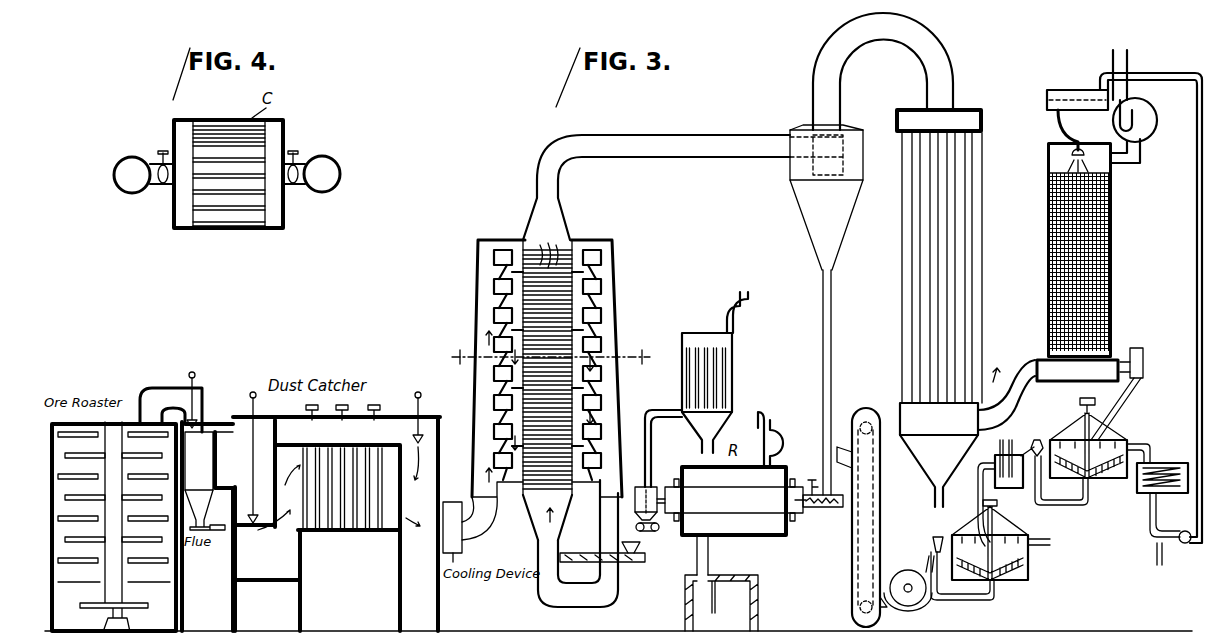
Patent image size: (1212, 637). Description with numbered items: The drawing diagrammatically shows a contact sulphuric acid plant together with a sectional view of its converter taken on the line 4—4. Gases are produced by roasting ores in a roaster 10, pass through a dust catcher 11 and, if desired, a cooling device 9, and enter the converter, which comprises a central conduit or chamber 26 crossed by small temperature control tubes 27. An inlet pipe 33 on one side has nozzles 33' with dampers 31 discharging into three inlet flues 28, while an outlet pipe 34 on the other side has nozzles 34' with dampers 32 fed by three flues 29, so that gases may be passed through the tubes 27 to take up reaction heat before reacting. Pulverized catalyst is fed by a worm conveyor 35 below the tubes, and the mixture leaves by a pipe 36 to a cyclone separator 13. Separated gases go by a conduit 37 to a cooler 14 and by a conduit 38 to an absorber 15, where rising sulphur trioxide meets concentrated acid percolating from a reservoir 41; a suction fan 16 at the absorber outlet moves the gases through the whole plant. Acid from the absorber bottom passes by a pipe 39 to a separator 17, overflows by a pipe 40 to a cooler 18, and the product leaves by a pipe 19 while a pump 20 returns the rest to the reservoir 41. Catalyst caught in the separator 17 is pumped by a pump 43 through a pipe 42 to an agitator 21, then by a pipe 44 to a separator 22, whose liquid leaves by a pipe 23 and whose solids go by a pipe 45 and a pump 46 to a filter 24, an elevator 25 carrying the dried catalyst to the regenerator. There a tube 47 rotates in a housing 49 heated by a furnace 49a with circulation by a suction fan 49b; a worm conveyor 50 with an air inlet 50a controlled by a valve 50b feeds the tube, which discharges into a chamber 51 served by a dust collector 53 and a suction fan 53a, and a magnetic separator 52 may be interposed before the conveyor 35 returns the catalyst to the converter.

In FIG. 3, the section line 4— 4 is at (551, 360).
In FIG. 3, the cooling device 9 is at (462, 540).
In FIG. 3, the roaster 10 is at (114, 527).
In FIG. 3, the dust catcher 11 is at (287, 425).
In FIG. 3, the separator 13 is at (790, 170).
In FIG. 3, the cooler 14 is at (975, 238).
In FIG. 3, the absorber 15 is at (1112, 250).
In FIG. 3, the suction fan 16 is at (1142, 108).
In FIG. 3, the separator 17 is at (1108, 480).
In FIG. 3, the cooler 18 is at (1162, 463).
In FIG. 3, the pipe 19 is at (1150, 552).
In FIG. 3, the pump 20 is at (1185, 545).
In FIG. 3, the agitator 21 is at (1006, 490).
In FIG. 3, the separator 22 is at (1030, 574).
In FIG. 3, the pipe 23 is at (1050, 541).
In FIG. 3, the filter 24 is at (928, 602).
In FIG. 3, the elevator 25 is at (878, 512).
In FIG. 4, the central conduit or chamber 26 is at (210, 134).
In FIG. 3, the central conduit or chamber 26 is at (535, 252).
In FIG. 4, the temperature control tubes 27 is at (268, 142).
In FIG. 3, the temperature control tubes 27 is at (546, 268).
In FIG. 4, the inlet flues 28 is at (184, 225).
In FIG. 3, the inlet flues 28 is at (500, 263).
In FIG. 4, the flues 29 is at (274, 225).
In FIG. 3, the flues 29 is at (592, 350).
In FIG. 4, the damper 31 is at (161, 186).
In FIG. 3, the damper 31 is at (500, 333).
In FIG. 4, the damper 32 is at (300, 186).
In FIG. 3, the damper 32 is at (590, 320).
In FIG. 4, the inlet or supply pipe 33 is at (129, 190).
In FIG. 3, the inlet or supply pipe 33 is at (475, 359).
In FIG. 4, the outlets or nozzles 33' is at (145, 156).
In FIG. 3, the outlets or nozzles 33' is at (472, 372).
In FIG. 4, the outlet pipe 34 is at (338, 174).
In FIG. 3, the outlet pipe 34 is at (622, 359).
In FIG. 4, the nozzles 34' is at (315, 155).
In FIG. 3, the nozzles 34' is at (624, 372).
In FIG. 3, the worm conveyor 35 is at (570, 543).
In FIG. 3, the pipe 36 is at (700, 142).
In FIG. 3, the conduit 37 is at (922, 58).
In FIG. 3, the conduit 38 is at (1016, 370).
In FIG. 3, the pipe 39 is at (1138, 400).
In FIG. 3, the pipe 40 is at (1147, 444).
In FIG. 3, the reservoir 41 is at (1047, 98).
In FIG. 3, the pipe 42 is at (1085, 508).
In FIG. 3, the pump 43 is at (1037, 440).
In FIG. 3, the pipe 44 is at (978, 482).
In FIG. 3, the pipe 45 is at (992, 598).
In FIG. 3, the pump 46 is at (937, 537).
In FIG. 3, the tube 47 is at (737, 515).
In FIG. 3, the housing 49 is at (780, 540).
In FIG. 3, the furnace 49a is at (758, 598).
In FIG. 3, the suction fan 49b is at (780, 432).
In FIG. 3, the worm conveyor 50 is at (834, 508).
In FIG. 3, the air inlet 50a is at (812, 480).
In FIG. 3, the valve 50b is at (806, 500).
In FIG. 3, the chamber 51 is at (649, 487).
In FIG. 3, the magnetic separator 52 is at (656, 532).
In FIG. 3, the dust collector 53 is at (733, 375).
In FIG. 3, the suction fan 53a is at (748, 310).